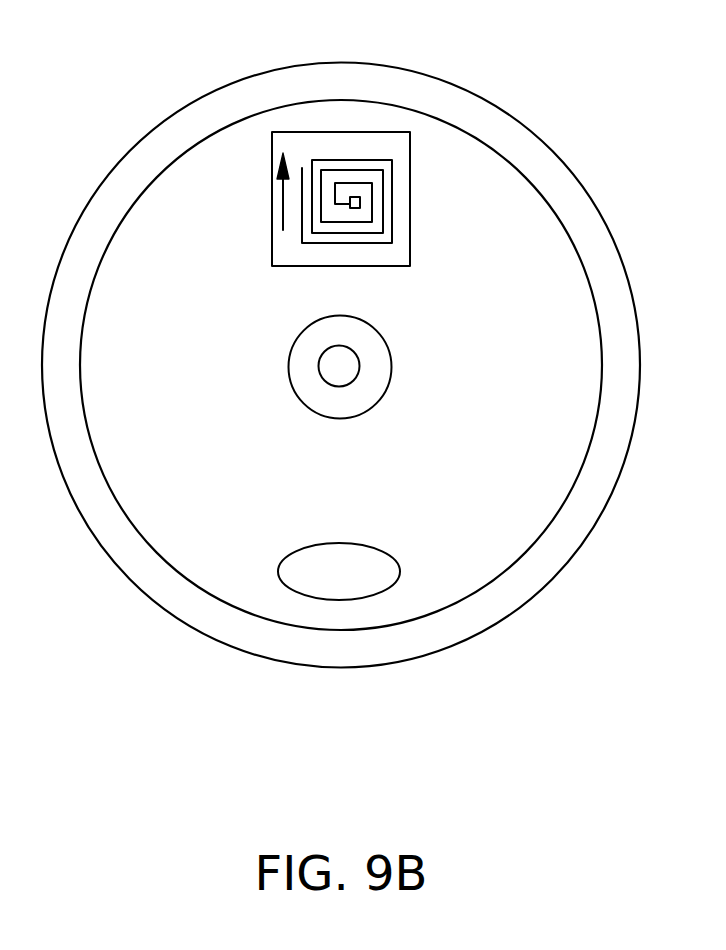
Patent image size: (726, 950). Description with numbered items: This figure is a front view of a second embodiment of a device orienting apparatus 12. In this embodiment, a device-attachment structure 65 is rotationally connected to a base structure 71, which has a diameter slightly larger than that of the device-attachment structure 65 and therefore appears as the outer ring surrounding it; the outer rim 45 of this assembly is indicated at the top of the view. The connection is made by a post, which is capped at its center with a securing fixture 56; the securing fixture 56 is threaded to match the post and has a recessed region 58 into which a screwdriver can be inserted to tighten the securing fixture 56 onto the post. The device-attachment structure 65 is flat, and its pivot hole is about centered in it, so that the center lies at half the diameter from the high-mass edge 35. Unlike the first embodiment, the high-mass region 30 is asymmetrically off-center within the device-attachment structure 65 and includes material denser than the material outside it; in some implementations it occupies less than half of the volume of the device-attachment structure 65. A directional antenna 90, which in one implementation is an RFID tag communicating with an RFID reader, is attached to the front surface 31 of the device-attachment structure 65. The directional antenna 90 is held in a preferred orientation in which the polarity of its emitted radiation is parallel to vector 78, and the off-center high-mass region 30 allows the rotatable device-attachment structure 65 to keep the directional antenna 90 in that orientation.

The device orienting apparatus 12 is at (352, 797).
The high-mass region 30 is at (402, 572).
The front surface 31 is at (560, 443).
The high-mass edge 35 is at (367, 634).
The outer rim 45 is at (352, 88).
The securing fixture 56 is at (392, 372).
The recessed region 58 is at (332, 370).
The device-attachment structure 65 is at (562, 330).
The base structure 71 is at (153, 600).
The preferred orientation vector 78 is at (282, 192).
The directional antenna 90 is at (402, 237).